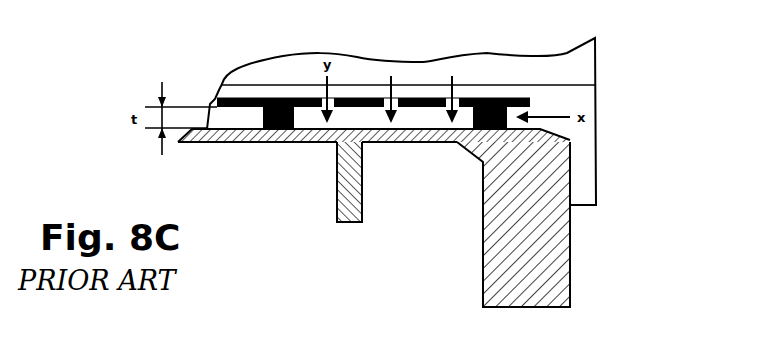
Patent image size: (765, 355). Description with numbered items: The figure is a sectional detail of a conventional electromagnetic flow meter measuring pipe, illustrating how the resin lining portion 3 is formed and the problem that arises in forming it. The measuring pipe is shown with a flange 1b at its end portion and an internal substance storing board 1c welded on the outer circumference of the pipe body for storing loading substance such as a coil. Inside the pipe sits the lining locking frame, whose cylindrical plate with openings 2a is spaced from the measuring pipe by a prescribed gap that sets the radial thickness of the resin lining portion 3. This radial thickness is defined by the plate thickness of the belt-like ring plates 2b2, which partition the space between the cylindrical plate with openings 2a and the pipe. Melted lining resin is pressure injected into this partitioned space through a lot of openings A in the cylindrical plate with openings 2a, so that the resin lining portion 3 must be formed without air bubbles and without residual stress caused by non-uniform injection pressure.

The flange 1b is at (571, 250).
The internal substance storing board 1c is at (362, 200).
The cylindrical plate with openings 2a is at (497, 98).
The belt-like ring plate 2b2 is at (294, 114).
The resin lining portion 3 is at (598, 125).
The opening A is at (338, 90).